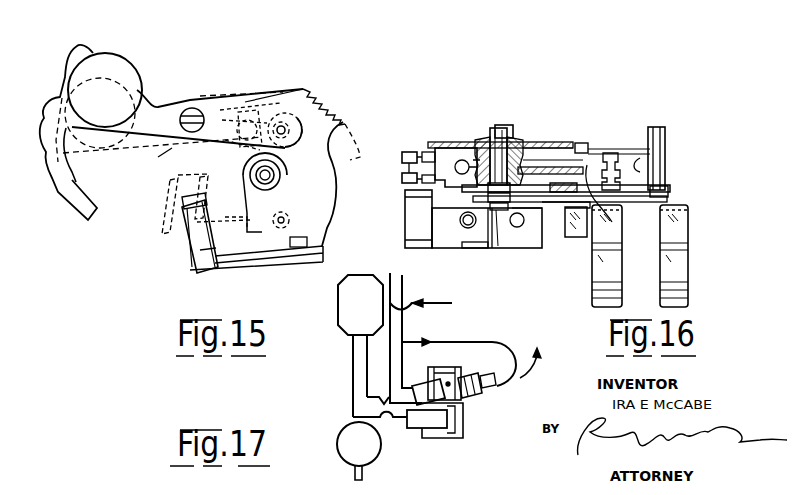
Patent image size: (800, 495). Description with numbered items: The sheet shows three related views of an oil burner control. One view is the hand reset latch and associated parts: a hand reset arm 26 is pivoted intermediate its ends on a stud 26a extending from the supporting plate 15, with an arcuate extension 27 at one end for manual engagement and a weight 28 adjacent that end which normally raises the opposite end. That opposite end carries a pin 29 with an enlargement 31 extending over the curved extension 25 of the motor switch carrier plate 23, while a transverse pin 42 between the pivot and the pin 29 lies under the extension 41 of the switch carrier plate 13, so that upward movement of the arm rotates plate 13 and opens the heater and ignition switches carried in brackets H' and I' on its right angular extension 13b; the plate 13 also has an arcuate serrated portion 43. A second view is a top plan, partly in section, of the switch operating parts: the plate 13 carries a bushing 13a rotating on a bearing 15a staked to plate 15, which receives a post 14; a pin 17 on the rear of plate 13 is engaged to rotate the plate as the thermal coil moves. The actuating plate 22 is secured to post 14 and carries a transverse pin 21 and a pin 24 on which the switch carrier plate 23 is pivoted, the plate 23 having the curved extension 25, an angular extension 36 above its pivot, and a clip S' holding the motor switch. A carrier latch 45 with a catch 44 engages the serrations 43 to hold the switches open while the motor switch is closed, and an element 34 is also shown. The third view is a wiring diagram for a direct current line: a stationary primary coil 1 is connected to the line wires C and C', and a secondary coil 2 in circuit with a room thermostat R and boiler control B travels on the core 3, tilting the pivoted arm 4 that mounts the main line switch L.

In FIG. 15, the arcuate extension 27 is at (49, 105).
In FIG. 15, the weight 28 is at (112, 66).
In FIG. 15, the hand reset arm 26 is at (168, 110).
In FIG. 15, the stud 26a is at (165, 152).
In FIG. 15, the extension 41 is at (218, 103).
In FIG. 15, the transverse pin 42 is at (235, 145).
In FIG. 15, the pin 29 is at (283, 135).
In FIG. 15, the arcuate serrated portion 43 is at (312, 110).
In FIG. 16, the arcuate serrated portion 43 is at (577, 165).
In FIG. 15, the enlargement 31 is at (338, 178).
In FIG. 15, the switch carrier plate 13 is at (300, 222).
In FIG. 16, the switch carrier plate 13 is at (480, 170).
In FIG. 15, the bracket H' is at (172, 223).
In FIG. 16, the bracket H' is at (418, 141).
In FIG. 15, the bracket I' is at (183, 271).
In FIG. 16, the bracket I' is at (487, 245).
In FIG. 16, the switch mechanism supporting plate 15 is at (455, 143).
In FIG. 16, the bearing 15a is at (483, 137).
In FIG. 16, the pin 17 is at (503, 125).
In FIG. 16, the bushing 13a is at (532, 165).
In FIG. 16, the pin 24 is at (545, 160).
In FIG. 16, the post 34 is at (660, 130).
In FIG. 16, the carrier latch 45 is at (640, 168).
In FIG. 16, the transverse pin 21 is at (621, 176).
In FIG. 16, the actuating plate 22 is at (668, 192).
In FIG. 16, the clip S' is at (661, 256).
In FIG. 16, the catch 44 is at (612, 222).
In FIG. 16, the angular extension 36 is at (573, 238).
In FIG. 16, the right angular extension 13b is at (538, 223).
In FIG. 16, the switch carrier plate 23 is at (528, 213).
In FIG. 16, the post 14 is at (498, 213).
In FIG. 16, the curved extension 25 is at (488, 207).
In FIG. 17, the room thermostat R is at (358, 287).
In FIG. 17, the commercial line wire C' is at (387, 334).
In FIG. 17, the commercial line wire C is at (453, 331).
In FIG. 17, the secondary coil 2 is at (418, 383).
In FIG. 17, the core 3 is at (461, 372).
In FIG. 17, the pivoted arm 4 is at (474, 397).
In FIG. 17, the main line switch L is at (495, 388).
In FIG. 17, the primary coil 1 is at (427, 422).
In FIG. 17, the boiler control B is at (353, 448).